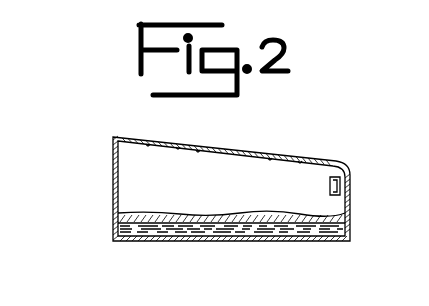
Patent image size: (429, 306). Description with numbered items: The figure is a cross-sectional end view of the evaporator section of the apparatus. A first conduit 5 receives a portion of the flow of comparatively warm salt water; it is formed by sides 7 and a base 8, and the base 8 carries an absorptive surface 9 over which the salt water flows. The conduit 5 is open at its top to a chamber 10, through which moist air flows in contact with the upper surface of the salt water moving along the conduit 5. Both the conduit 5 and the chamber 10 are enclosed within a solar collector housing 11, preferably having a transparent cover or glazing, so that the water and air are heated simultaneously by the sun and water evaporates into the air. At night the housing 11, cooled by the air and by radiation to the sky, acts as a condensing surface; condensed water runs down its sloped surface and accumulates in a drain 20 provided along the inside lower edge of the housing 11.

The conduit 5 is at (226, 172).
The sides 7 is at (120, 168).
The base 8 is at (292, 229).
The absorptive surface 9 is at (252, 222).
The chamber 10 is at (238, 186).
The solar collector housing 11 is at (265, 158).
The drain 20 is at (330, 180).